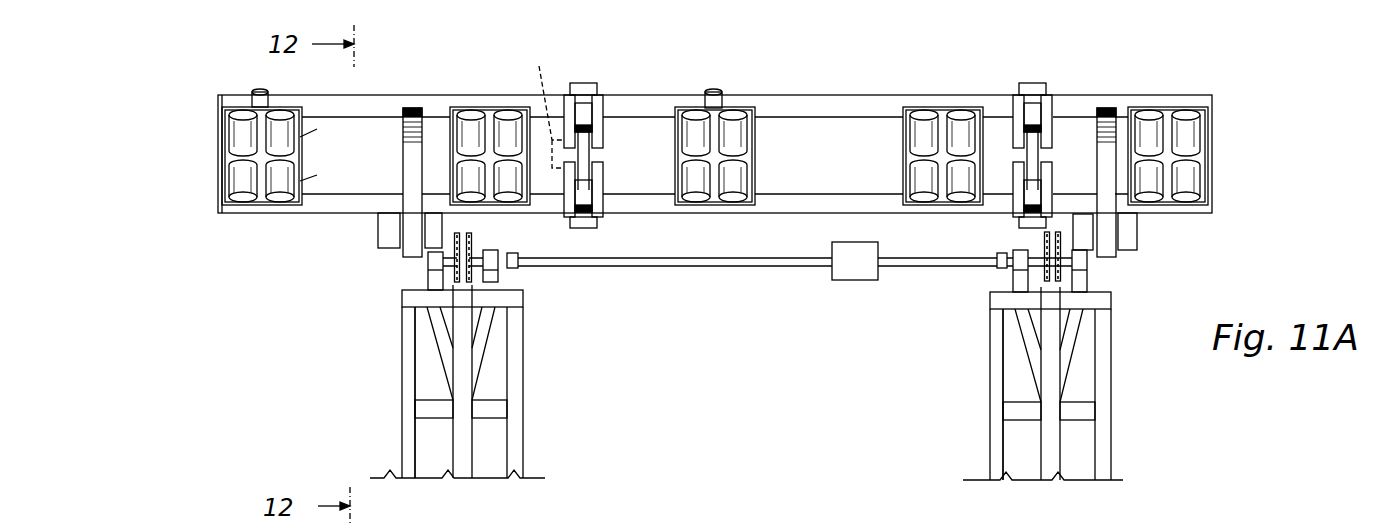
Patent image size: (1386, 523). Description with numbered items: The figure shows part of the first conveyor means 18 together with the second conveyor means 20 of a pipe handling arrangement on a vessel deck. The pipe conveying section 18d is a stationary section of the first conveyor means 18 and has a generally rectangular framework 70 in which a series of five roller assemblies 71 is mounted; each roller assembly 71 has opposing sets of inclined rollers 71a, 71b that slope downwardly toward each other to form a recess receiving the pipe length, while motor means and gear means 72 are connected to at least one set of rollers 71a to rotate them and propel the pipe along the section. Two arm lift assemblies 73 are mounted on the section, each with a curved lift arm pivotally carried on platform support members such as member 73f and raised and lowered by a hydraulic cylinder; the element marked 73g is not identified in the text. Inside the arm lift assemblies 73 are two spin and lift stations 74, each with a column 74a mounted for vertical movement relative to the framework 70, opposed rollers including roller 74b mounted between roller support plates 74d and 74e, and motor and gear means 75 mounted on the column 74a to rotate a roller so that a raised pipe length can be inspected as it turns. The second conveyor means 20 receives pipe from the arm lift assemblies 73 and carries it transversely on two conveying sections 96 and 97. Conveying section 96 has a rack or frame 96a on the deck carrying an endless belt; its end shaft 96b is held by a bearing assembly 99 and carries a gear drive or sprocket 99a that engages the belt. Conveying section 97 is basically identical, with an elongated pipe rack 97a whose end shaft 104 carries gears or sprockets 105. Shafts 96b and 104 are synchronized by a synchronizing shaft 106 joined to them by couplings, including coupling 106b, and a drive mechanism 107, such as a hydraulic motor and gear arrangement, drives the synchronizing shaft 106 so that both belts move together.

The first conveyor means 18 is at (1226, 111).
The pipe conveying section 18d is at (827, 100).
The second conveyor means 20 is at (462, 381).
The framework 70 is at (1136, 96).
The roller assembly 71 is at (237, 110).
The set of inclined rollers 71a is at (327, 132).
The set of inclined rollers 71b is at (327, 176).
The motor means and gear means 72 is at (257, 90).
The arm lift assembly 73 is at (411, 107).
The platform support member 73f is at (380, 222).
The disc mounting block 73g is at (440, 226).
The spin and lift station 74 is at (600, 100).
The column 74a is at (590, 228).
The roller 74b is at (586, 118).
The roller support plate 74d is at (584, 190).
The roller support plate 74e is at (567, 200).
The motor and gear means 75 is at (544, 108).
The conveying section 96 is at (523, 421).
The rack or frame 96a is at (518, 367).
The end shaft 96b is at (474, 268).
The conveying section 97 is at (1113, 432).
The elongated pipe rack 97a is at (1000, 360).
The bearing assembly 99 is at (428, 278).
The gear drive or sprocket 99a is at (460, 232).
The end shaft 104 is at (1065, 262).
The gears or sprockets 105 is at (1040, 240).
The synchronizing shaft 106 is at (776, 268).
The coupling 106b is at (512, 266).
The drive mechanism 107 is at (855, 282).